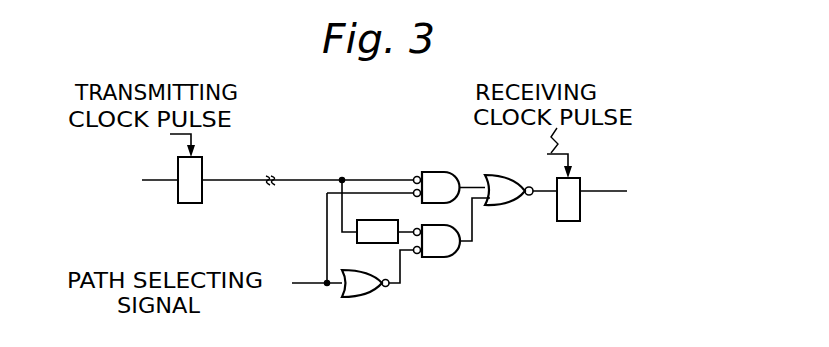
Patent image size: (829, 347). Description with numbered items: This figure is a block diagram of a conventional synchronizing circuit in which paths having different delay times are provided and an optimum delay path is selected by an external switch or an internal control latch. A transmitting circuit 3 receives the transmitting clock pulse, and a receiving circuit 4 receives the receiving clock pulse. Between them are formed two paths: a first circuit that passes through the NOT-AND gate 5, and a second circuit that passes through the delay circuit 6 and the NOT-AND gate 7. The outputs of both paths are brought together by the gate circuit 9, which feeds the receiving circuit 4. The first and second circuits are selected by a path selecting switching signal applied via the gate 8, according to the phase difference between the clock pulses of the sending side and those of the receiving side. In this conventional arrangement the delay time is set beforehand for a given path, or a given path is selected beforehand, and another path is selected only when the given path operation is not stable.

The transmitting circuit 3 is at (192, 204).
The receiving circuit 4 is at (572, 221).
The NOT-AND gate 5 is at (445, 171).
The delay circuit 6 is at (380, 220).
The NOT-AND gate 7 is at (443, 257).
The gate circuit 8 is at (362, 290).
The gate circuit 9 is at (505, 206).